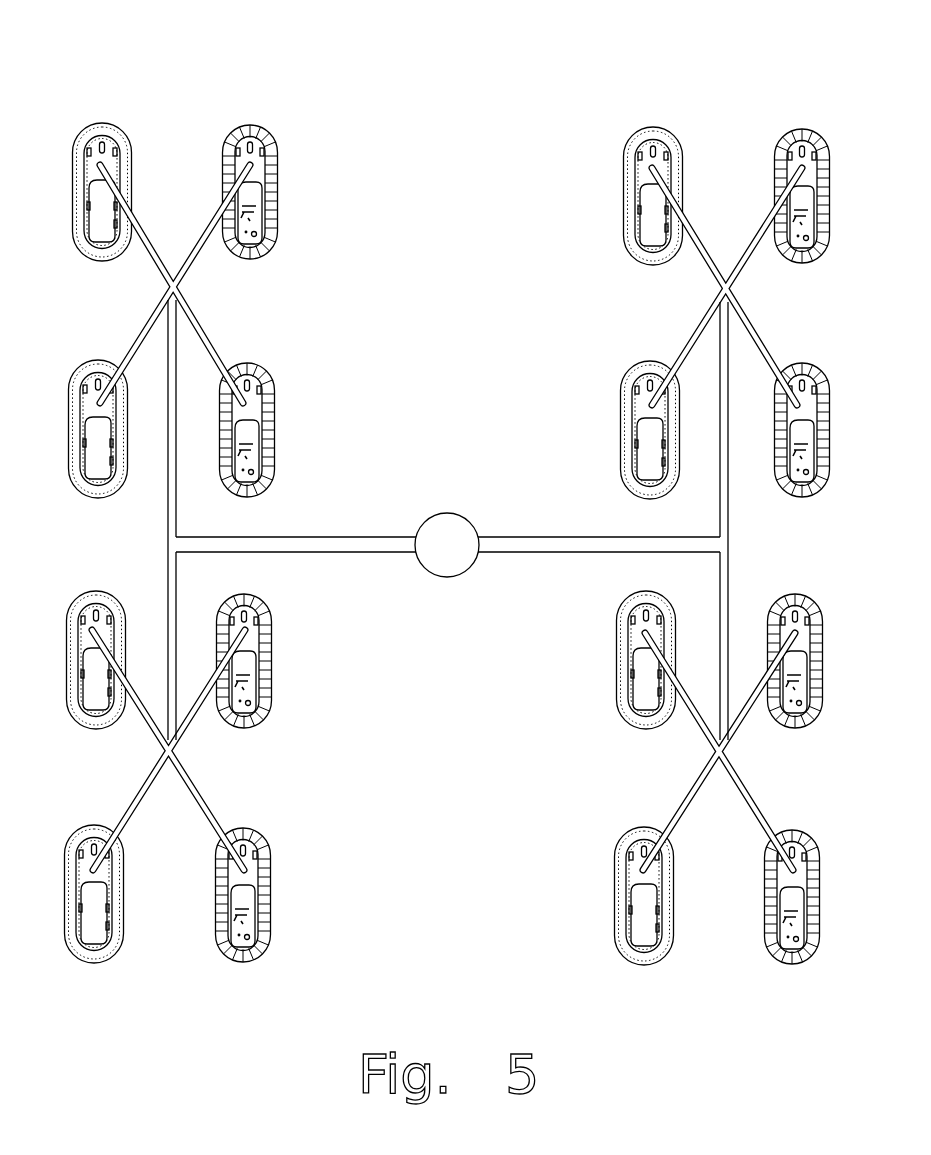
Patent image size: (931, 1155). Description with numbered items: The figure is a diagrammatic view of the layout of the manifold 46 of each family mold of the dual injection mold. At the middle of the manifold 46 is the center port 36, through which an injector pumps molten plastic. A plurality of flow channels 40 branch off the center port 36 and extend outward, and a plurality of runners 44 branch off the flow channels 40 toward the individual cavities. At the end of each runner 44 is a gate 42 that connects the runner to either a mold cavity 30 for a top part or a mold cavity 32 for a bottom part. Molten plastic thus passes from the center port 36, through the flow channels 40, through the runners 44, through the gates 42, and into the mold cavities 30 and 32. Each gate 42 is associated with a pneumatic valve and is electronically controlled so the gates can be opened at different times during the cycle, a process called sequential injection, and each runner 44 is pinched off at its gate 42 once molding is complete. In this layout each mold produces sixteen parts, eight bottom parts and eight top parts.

The mold cavity 30 is at (795, 963).
The mold cavity 32 is at (647, 963).
The center port 36 is at (447, 568).
The flow channel 40 is at (316, 538).
The gate 42 is at (272, 175).
The runner 44 is at (142, 233).
The manifold 46 is at (451, 508).